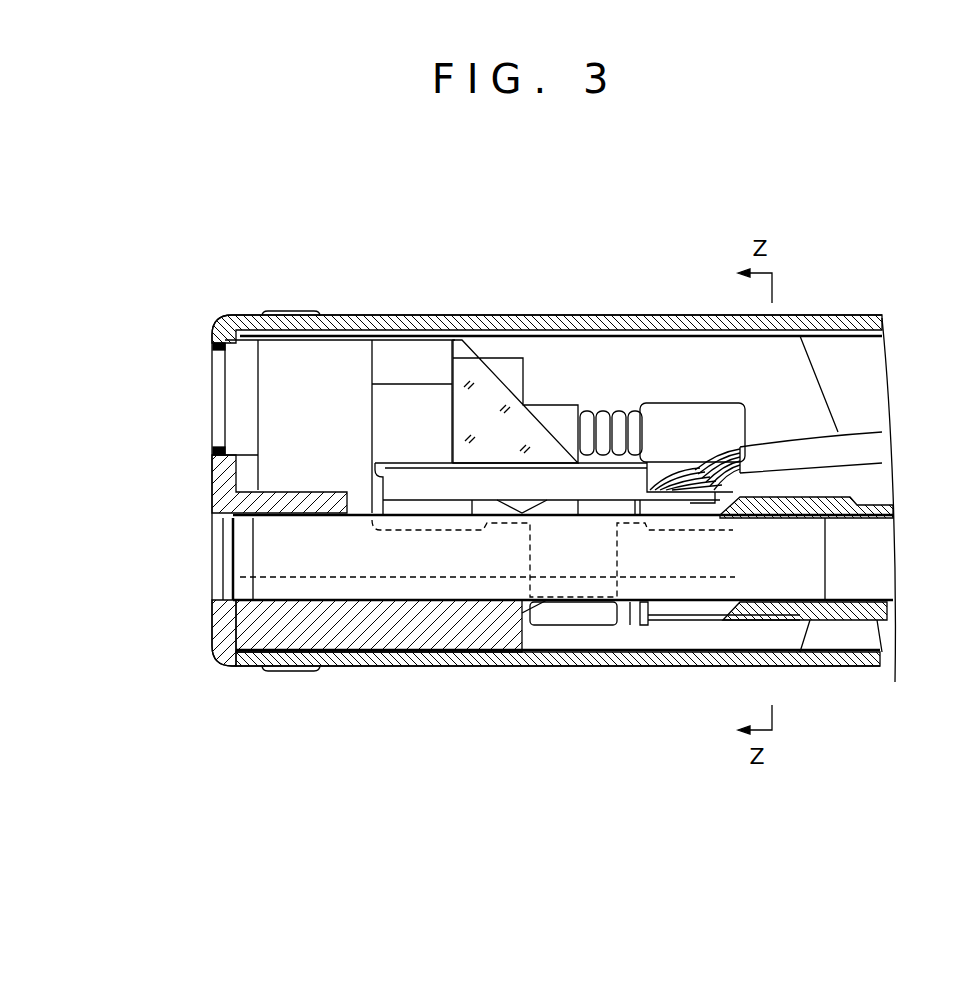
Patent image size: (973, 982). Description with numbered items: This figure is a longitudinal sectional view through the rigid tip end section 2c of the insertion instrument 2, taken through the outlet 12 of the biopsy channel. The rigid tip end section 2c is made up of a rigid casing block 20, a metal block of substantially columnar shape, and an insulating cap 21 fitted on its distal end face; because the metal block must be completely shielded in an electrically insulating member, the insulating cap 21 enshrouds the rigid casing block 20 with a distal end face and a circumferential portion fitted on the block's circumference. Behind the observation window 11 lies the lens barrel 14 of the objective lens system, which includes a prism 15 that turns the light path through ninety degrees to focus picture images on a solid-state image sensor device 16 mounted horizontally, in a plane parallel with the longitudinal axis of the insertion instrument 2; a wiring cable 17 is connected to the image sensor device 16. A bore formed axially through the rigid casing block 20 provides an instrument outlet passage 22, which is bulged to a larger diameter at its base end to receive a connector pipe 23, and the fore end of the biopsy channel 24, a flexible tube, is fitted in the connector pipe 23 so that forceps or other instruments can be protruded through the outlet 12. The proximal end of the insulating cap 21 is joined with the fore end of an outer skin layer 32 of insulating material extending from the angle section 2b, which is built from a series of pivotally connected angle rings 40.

The insertion instrument 2 is at (597, 220).
The angle section 2b is at (813, 680).
The rigid tip end section 2c is at (228, 670).
The observation window 11 is at (213, 350).
The outlet of biopsy channel 12 is at (213, 524).
The lens barrel 14 is at (410, 407).
The prism 15 is at (488, 397).
The solid-state image sensor device 16 is at (581, 487).
The wiring cable 17 is at (716, 487).
The rigid casing block 20 is at (367, 632).
The insulating cap 21 is at (213, 625).
The instrument outlet passage 22 is at (452, 590).
The connector pipe 23 is at (633, 597).
The biopsy channel 24 is at (880, 640).
The outer skin layer 32 is at (540, 668).
The angle rings 40 is at (680, 660).